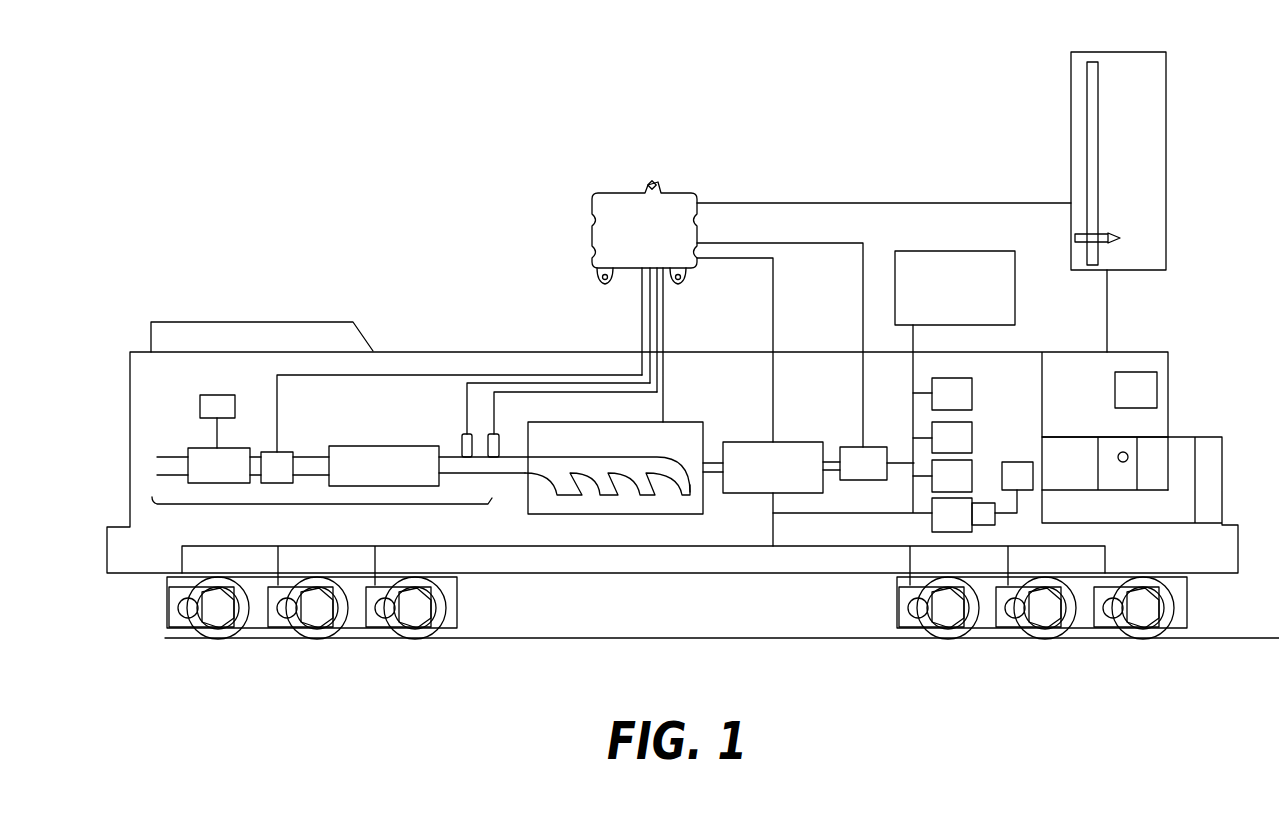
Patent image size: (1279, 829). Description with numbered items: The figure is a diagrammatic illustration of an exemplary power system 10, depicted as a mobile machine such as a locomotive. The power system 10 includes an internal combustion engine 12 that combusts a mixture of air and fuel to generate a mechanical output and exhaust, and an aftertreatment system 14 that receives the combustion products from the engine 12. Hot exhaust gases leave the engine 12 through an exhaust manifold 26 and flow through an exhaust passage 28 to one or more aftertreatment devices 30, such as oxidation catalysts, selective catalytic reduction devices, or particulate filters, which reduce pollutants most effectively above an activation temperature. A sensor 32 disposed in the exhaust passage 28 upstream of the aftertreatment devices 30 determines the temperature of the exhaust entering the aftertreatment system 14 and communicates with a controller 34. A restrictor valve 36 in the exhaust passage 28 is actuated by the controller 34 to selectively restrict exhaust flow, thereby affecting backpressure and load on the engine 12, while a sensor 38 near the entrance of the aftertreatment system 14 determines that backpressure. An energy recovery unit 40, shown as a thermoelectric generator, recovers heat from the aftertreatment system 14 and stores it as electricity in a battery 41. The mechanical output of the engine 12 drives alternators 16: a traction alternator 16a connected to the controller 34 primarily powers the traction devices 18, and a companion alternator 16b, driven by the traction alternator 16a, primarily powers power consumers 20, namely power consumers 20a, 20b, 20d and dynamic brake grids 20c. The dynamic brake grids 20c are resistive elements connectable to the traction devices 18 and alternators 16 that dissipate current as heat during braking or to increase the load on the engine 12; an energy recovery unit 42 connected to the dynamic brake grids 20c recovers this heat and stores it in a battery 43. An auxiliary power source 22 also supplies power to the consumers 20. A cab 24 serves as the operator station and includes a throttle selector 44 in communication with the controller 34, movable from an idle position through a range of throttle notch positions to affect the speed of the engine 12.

The power system 10 is at (323, 157).
The internal combustion engine 12 is at (679, 448).
The aftertreatment system 14 is at (308, 505).
The alternator 16 is at (818, 442).
The traction alternator 16a is at (760, 476).
The companion alternator 16b is at (851, 471).
The traction device 18 is at (183, 620).
The power consumers 20 is at (970, 452).
The power consumer 20a is at (940, 402).
The power consumer 20b is at (940, 446).
The dynamic brake grid 20c is at (940, 523).
The power consumer 20d is at (940, 484).
The auxiliary power source 22 is at (947, 291).
The cab 24 is at (1168, 352).
The exhaust manifold 26 is at (632, 467).
The exhaust passage 28 is at (511, 471).
The aftertreatment device 30 is at (376, 474).
The sensor 32 is at (499, 440).
The controller 34 is at (642, 236).
The restrictor valve 36 is at (269, 476).
The sensor 38 is at (462, 440).
The energy recovery unit 40 is at (188, 450).
The battery 41 is at (200, 408).
The energy recovery unit 42 is at (995, 519).
The battery 43 is at (1010, 462).
The throttle selector 44 is at (1071, 90).